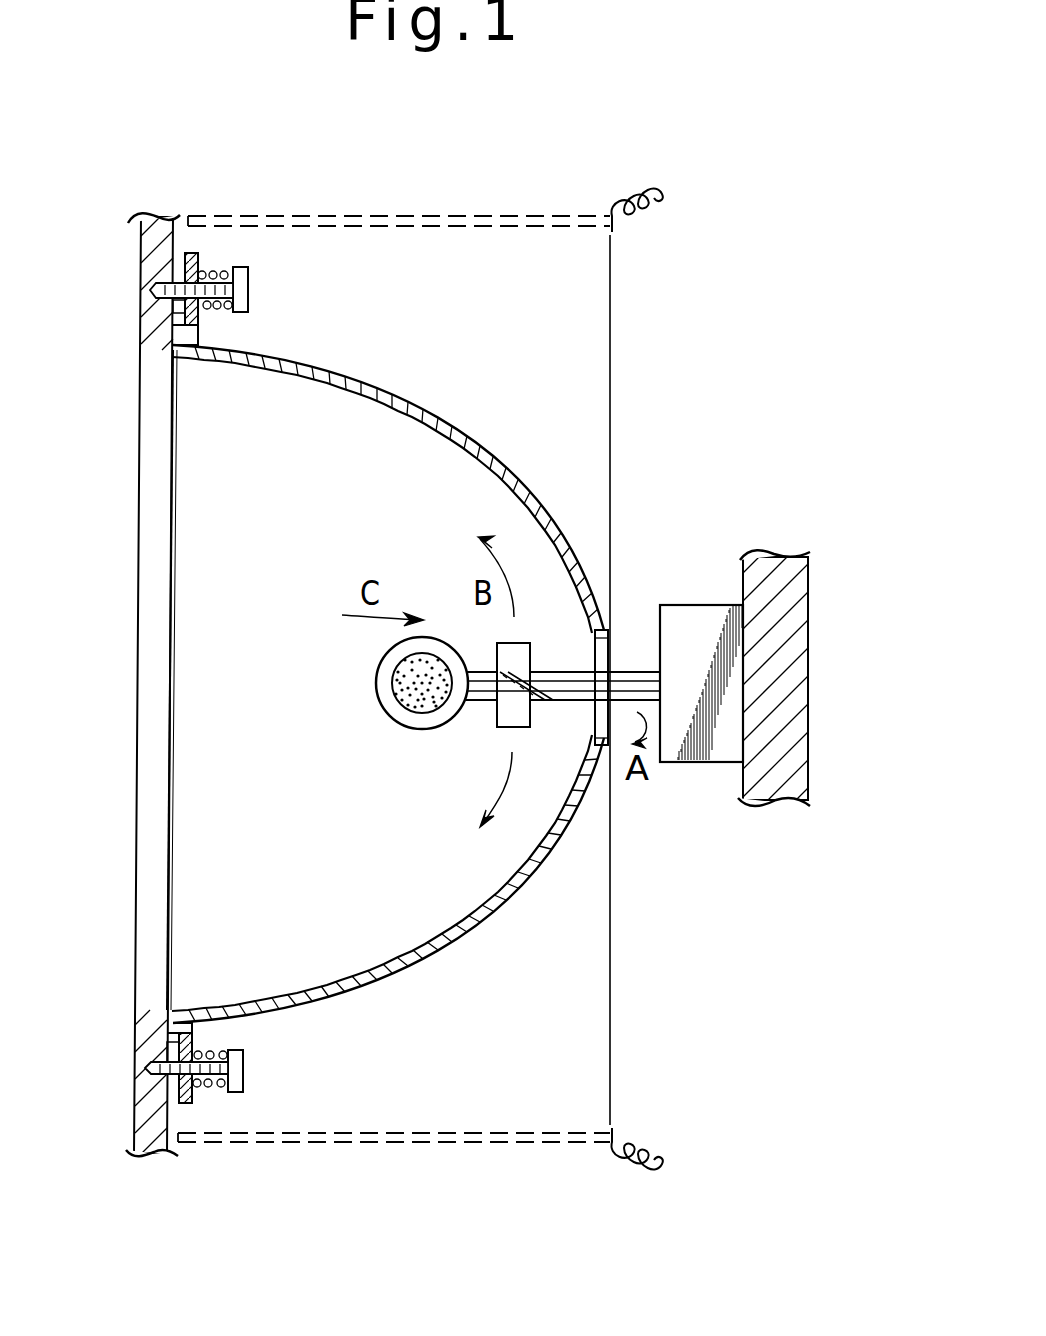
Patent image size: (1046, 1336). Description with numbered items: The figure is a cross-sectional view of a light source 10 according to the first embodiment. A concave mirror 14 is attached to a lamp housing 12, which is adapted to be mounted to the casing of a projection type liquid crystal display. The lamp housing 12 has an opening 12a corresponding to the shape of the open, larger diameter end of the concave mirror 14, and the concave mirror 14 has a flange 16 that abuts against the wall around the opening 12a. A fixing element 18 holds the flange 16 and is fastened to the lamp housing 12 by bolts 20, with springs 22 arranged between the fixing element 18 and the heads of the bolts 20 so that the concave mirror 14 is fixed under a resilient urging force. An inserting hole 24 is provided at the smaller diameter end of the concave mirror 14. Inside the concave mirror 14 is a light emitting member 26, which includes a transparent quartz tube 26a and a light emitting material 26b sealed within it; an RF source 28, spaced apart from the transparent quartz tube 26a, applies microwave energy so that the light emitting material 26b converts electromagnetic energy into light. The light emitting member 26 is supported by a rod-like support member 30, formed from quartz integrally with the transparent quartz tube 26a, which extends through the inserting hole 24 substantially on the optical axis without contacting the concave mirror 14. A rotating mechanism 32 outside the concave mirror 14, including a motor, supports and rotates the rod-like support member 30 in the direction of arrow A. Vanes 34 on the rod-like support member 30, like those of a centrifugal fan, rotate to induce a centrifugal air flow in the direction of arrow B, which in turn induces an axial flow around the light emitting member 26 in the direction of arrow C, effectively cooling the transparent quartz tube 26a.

The light source 10 is at (647, 420).
The lamp housing 12 is at (154, 220).
The opening 12a is at (146, 922).
The concave mirror 14 is at (380, 390).
The flange 16 is at (187, 328).
The fixing element 18 is at (194, 254).
The bolts 20 is at (250, 290).
The springs 22 is at (216, 275).
The inserting hole 24 is at (612, 627).
The light emitting member 26 is at (378, 690).
The transparent quartz tube 26a is at (394, 707).
The light emitting material 26b is at (413, 700).
The RF source 28 is at (411, 1140).
The rod-like support member 30 is at (634, 660).
The rotating mechanism 32 is at (715, 750).
The vanes 34 is at (498, 720).